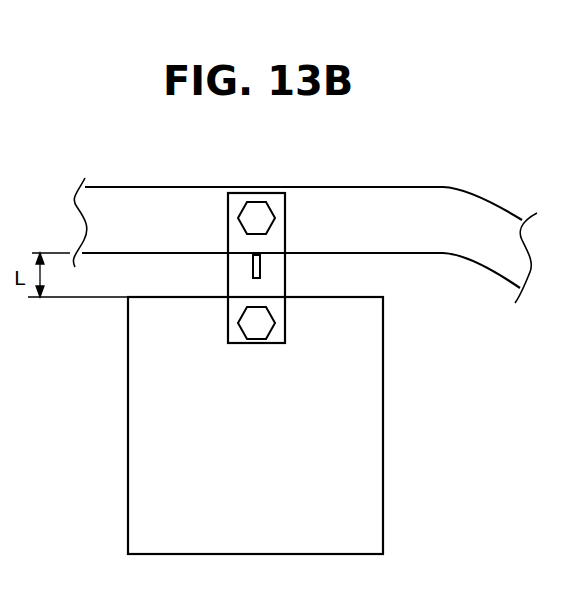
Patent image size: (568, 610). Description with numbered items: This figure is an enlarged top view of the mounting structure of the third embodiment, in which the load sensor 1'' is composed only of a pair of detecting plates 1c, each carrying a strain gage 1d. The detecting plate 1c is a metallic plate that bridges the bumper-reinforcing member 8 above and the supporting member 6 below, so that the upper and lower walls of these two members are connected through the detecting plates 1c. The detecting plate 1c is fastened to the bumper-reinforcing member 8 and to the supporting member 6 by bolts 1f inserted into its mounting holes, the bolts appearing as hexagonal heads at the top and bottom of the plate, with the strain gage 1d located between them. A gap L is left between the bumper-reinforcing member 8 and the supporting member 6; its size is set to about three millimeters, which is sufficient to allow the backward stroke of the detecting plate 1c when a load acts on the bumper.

The bumper-reinforcing member 8 is at (310, 190).
The load sensor 1'' is at (339, 284).
The detecting plate 1c is at (272, 238).
The bolt 1f is at (252, 213).
The strain gage 1d is at (253, 263).
The supporting member 6 is at (383, 477).